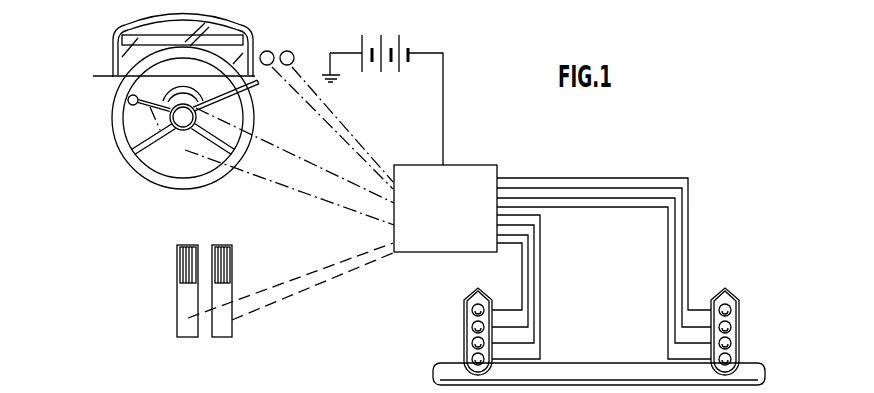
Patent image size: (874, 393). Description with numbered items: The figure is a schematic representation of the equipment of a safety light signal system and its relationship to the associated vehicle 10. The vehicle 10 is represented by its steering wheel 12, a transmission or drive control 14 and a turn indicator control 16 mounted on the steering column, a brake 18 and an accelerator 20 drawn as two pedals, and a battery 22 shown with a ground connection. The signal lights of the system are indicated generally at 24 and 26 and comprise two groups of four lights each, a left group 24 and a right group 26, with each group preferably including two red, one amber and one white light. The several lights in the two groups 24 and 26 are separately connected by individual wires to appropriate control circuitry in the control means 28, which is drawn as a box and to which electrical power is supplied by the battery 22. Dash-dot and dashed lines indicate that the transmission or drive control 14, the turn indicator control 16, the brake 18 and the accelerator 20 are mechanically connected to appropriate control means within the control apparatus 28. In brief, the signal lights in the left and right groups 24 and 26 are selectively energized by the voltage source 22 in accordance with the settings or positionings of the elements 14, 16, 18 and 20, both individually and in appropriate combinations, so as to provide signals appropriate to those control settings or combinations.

The vehicle 10 is at (445, 199).
The steering wheel 12 is at (123, 140).
The transmission or drive control 14 is at (262, 88).
The turn indicator control 16 is at (122, 108).
The brake 18 is at (177, 264).
The accelerator 20 is at (232, 258).
The battery 22 is at (393, 33).
The signal lights 24 is at (464, 335).
The signal lights 26 is at (739, 334).
The control means 28 is at (435, 246).